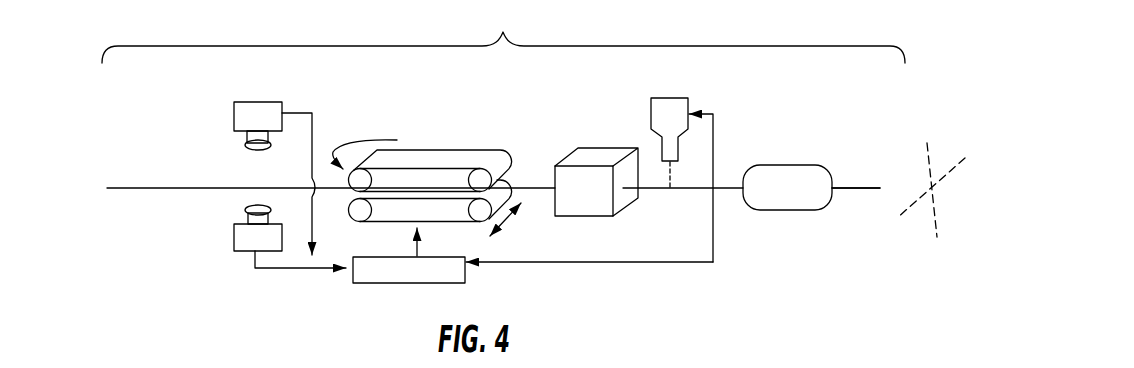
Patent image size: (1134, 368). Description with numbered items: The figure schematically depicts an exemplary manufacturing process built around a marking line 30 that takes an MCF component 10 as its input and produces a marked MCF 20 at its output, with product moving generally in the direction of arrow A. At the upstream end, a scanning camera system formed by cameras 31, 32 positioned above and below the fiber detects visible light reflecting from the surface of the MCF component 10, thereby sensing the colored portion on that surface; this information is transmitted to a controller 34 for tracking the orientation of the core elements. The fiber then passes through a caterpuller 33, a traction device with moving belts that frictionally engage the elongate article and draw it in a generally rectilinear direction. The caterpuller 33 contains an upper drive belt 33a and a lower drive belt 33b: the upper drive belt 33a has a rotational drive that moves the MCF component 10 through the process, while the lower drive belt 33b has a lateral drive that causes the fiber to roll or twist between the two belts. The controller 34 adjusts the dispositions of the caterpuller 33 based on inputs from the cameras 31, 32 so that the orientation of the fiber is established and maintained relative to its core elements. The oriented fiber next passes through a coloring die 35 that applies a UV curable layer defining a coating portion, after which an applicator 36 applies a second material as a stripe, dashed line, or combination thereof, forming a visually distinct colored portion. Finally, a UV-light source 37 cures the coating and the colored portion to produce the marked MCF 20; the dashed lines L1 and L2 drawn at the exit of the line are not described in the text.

The marking line 30 is at (503, 32).
The MCF component 10 is at (160, 181).
The arrow A is at (222, 200).
The scanning camera 31 is at (303, 104).
The scanning camera 32 is at (235, 258).
The caterpuller 33 is at (422, 164).
The upper drive belt 33a is at (480, 158).
The lower drive belt 33b is at (380, 222).
The controller 34 is at (473, 286).
The coloring die 35 is at (590, 142).
The applicator 36 is at (679, 90).
The UV-light source 37 is at (786, 155).
The marked MCF 20 is at (866, 175).
The first line L1 is at (908, 204).
The second line L2 is at (932, 163).